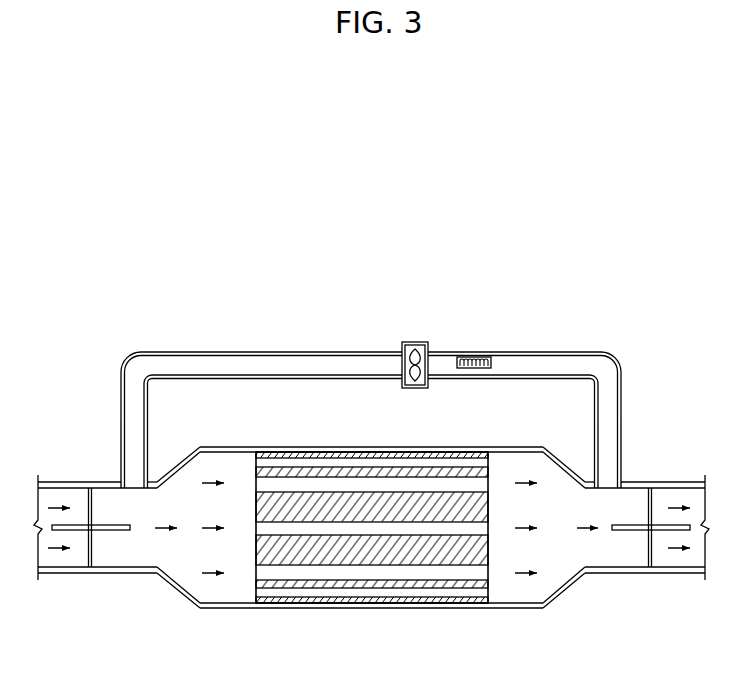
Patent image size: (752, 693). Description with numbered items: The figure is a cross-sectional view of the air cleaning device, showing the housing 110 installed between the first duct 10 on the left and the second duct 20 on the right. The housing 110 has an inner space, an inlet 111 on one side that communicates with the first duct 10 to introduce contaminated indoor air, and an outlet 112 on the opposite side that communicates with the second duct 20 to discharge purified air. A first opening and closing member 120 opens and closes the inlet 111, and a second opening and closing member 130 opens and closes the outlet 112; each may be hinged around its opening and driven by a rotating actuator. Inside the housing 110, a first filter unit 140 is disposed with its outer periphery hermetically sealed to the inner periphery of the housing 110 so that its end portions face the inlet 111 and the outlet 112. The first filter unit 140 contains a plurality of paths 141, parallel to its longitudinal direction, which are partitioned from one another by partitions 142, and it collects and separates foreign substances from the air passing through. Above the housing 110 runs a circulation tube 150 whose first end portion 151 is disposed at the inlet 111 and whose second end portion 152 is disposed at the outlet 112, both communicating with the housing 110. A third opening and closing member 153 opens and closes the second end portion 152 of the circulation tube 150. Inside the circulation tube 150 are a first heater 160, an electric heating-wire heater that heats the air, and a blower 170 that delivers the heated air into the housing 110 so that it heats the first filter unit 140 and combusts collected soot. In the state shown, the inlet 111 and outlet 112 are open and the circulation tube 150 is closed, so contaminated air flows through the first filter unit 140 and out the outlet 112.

The first duct 10 is at (55, 574).
The second duct 20 is at (677, 574).
The housing 110 is at (268, 452).
The inlet 111 is at (122, 567).
The outlet 112 is at (614, 560).
The first opening and closing member 120 is at (92, 553).
The second opening and closing member 130 is at (648, 550).
The first filter unit 140 is at (372, 496).
The paths 141 is at (373, 483).
The partitions 142 is at (407, 498).
The circulation tube 150 is at (343, 352).
The first end portion 151 is at (121, 480).
The second end portion 152 is at (619, 478).
The third opening and closing member 153 is at (611, 482).
The first heater 160 is at (477, 357).
The blower 170 is at (418, 344).